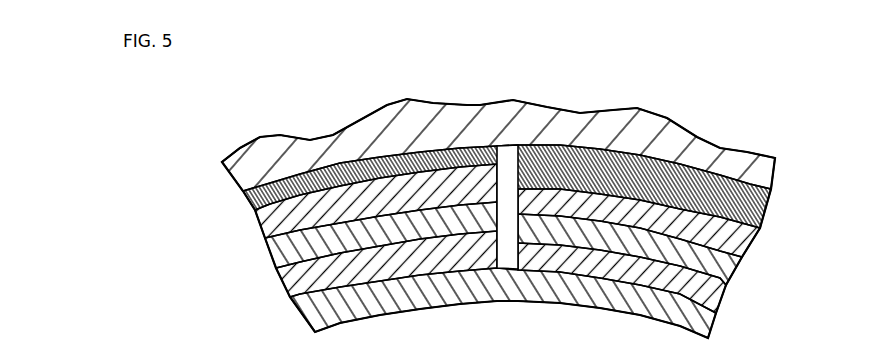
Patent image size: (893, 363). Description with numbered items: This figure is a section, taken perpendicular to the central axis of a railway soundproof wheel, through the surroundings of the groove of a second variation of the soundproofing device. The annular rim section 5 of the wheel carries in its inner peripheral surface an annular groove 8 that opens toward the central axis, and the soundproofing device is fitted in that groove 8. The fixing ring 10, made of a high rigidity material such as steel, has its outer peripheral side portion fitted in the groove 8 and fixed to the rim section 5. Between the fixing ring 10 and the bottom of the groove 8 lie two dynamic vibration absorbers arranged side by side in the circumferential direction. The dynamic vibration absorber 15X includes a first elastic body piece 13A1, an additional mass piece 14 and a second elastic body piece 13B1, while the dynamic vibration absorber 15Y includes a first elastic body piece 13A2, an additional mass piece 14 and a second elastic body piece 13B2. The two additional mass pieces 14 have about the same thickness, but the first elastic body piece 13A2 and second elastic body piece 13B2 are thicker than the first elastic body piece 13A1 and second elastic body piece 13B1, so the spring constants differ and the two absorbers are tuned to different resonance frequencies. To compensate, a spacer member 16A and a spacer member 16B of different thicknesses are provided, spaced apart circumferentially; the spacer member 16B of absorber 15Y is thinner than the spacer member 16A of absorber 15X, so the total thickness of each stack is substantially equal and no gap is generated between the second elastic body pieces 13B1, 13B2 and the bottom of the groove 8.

The rim section 5 is at (535, 122).
The groove 8 is at (578, 158).
The fixing ring 10 is at (538, 303).
The first elastic body piece 13A1 is at (740, 303).
The first elastic body piece 13A2 is at (282, 295).
The second elastic body piece 13B1 is at (740, 250).
The second elastic body piece 13B2 is at (258, 235).
The additional mass piece 14 is at (268, 265).
The dynamic vibration absorber 15X is at (698, 276).
The dynamic vibration absorber 15Y is at (316, 267).
The spacer member 16A is at (763, 218).
The spacer member 16B is at (257, 206).